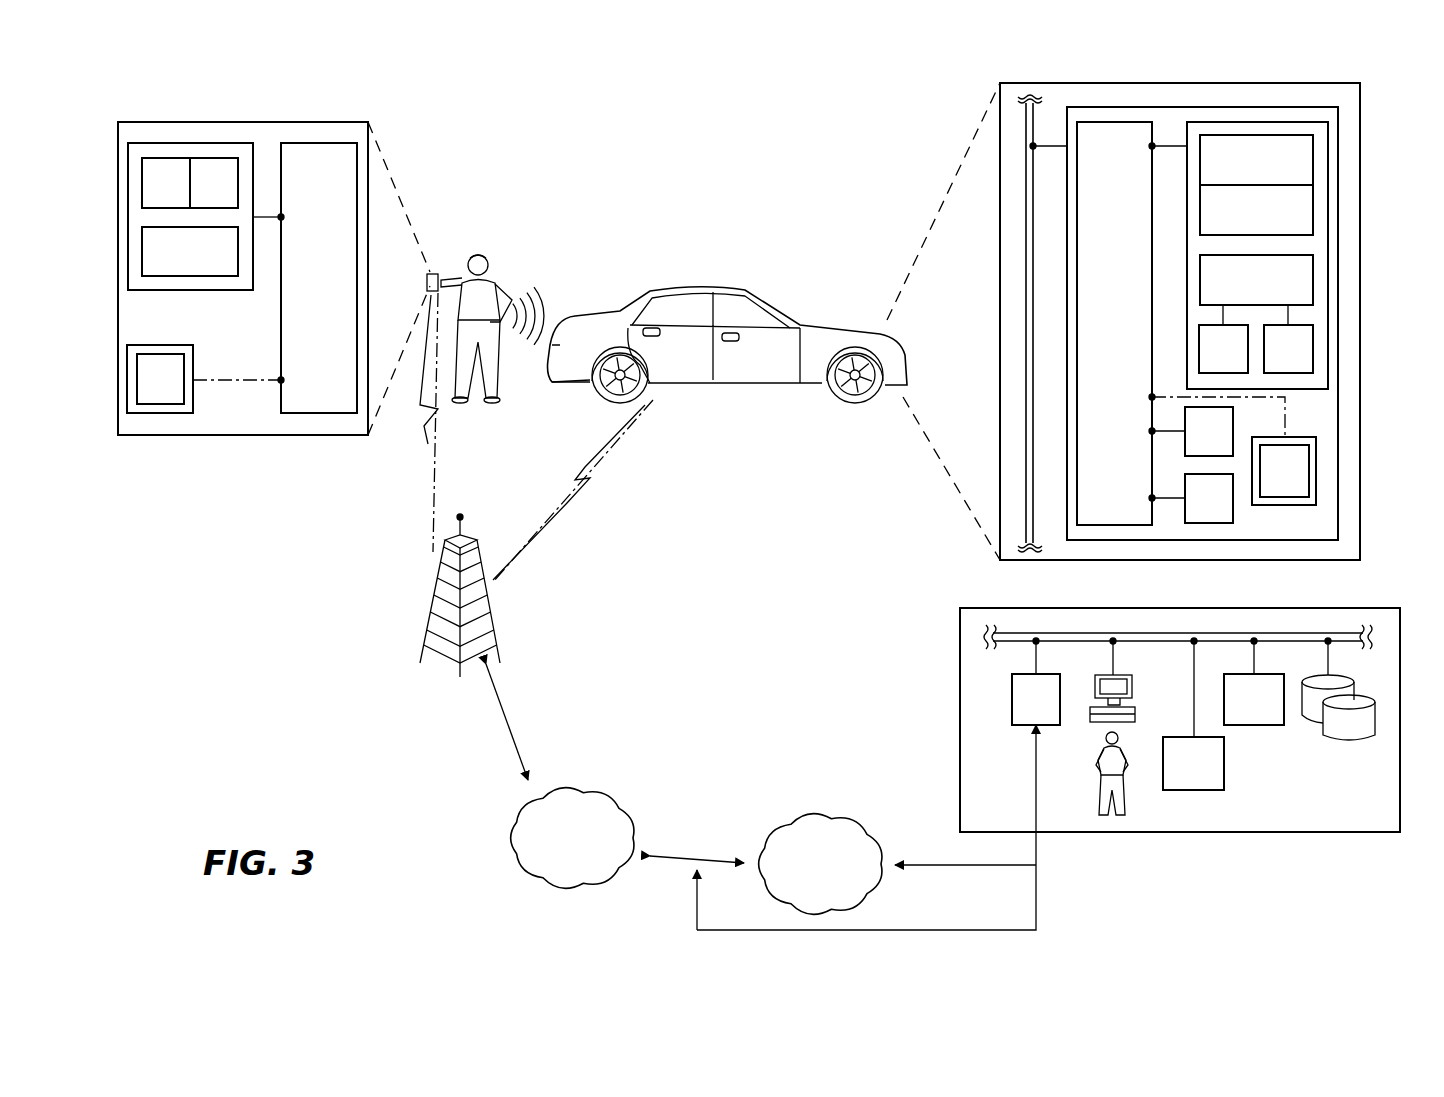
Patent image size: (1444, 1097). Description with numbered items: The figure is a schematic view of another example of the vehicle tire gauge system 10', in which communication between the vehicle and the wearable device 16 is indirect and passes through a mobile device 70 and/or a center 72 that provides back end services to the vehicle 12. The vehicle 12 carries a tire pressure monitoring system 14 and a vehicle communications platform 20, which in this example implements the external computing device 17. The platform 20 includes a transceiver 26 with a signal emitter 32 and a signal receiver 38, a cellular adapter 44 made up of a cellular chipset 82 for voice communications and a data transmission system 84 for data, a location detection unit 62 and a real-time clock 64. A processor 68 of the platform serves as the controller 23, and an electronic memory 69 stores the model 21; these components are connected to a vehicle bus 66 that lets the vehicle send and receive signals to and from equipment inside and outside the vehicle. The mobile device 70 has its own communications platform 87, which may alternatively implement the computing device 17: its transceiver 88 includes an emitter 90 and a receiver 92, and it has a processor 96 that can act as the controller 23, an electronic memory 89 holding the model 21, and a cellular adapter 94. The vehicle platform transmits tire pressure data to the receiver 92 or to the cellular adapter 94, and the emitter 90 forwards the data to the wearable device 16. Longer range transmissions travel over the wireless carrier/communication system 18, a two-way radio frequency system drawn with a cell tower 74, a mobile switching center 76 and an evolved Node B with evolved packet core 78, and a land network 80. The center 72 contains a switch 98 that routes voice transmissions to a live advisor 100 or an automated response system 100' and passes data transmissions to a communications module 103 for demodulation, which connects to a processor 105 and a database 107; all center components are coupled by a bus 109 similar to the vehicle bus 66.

The system 10' is at (206, 634).
The vehicle 12 is at (703, 289).
The tire pressure monitoring system 14 is at (648, 364).
The wearable device 16 is at (500, 323).
The computing device 17 is at (781, 314).
The wireless carrier/communication system 18 is at (470, 748).
The vehicle communications platform 20 is at (1338, 297).
The model 21 is at (152, 394).
The controller 23 is at (720, 323).
The transceiver 26 is at (1318, 185).
The signal emitter 32 is at (1249, 176).
The signal receiver 38 is at (1249, 225).
The cellular adapter 44 is at (1249, 296).
The location detection unit 62 is at (1201, 446).
The real-time clock 64 is at (1201, 514).
The vehicle bus 66 is at (1026, 312).
The processor 68 is at (1088, 337).
The electronic memory 69 is at (1283, 505).
The mobile device 70 is at (431, 274).
The center 72 is at (960, 708).
The cell tower 74 is at (493, 618).
The mobile switching center 76 is at (572, 838).
The evolved Node B and evolved packet core 78 is at (546, 855).
The land network 80 is at (813, 880).
The cellular chipset/component 82 is at (1215, 364).
The data transmission system 84 is at (1280, 364).
The mobile device communications platform 87 is at (320, 121).
The transceiver 88 is at (190, 147).
The electronic memory 89 is at (158, 413).
The signal emitter 90 is at (158, 198).
The signal receiver 92 is at (206, 198).
The cellular adapter 94 is at (182, 264).
The processor 96 is at (292, 289).
The switch 98 is at (1028, 714).
The live advisor 100 is at (1174, 800).
The automated response system 100' is at (1128, 646).
The communications module 103 is at (1181, 778).
The processor 105 is at (1242, 714).
The database 107 is at (1343, 726).
The bus 109 is at (1213, 632).